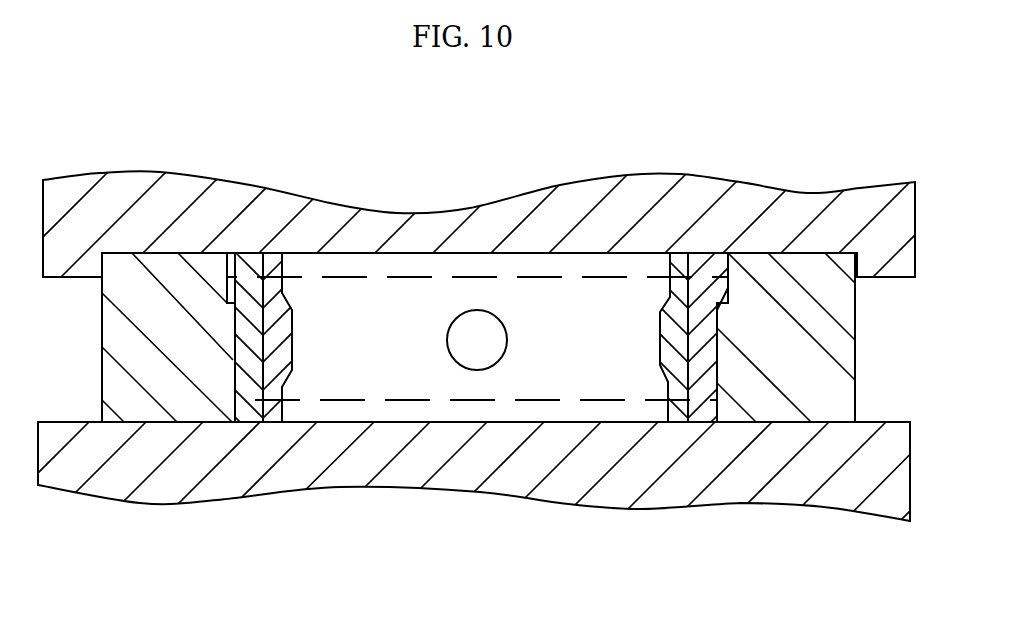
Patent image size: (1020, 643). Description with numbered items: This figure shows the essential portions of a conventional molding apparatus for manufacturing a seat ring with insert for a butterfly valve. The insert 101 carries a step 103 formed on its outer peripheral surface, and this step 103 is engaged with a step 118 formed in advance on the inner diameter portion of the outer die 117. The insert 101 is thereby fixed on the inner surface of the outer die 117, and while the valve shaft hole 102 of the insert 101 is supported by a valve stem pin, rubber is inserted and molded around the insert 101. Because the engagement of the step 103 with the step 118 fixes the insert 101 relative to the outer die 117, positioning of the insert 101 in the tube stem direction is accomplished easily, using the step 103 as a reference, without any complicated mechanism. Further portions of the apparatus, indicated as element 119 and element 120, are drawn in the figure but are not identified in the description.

The insert 101 is at (248, 380).
The valve shaft hole 102 is at (474, 313).
The step 103 is at (232, 305).
The outer die 117 is at (798, 385).
The step 118 is at (737, 286).
The second sealing ring 119 is at (672, 270).
The valve housing plate 120 is at (402, 470).